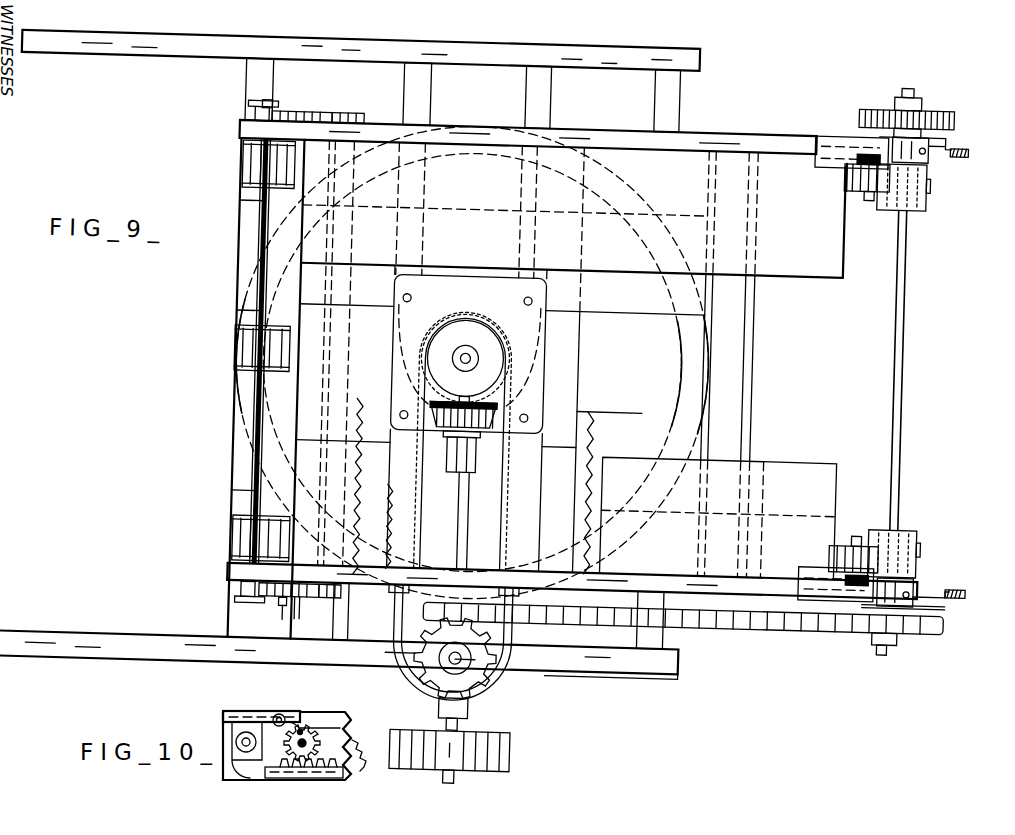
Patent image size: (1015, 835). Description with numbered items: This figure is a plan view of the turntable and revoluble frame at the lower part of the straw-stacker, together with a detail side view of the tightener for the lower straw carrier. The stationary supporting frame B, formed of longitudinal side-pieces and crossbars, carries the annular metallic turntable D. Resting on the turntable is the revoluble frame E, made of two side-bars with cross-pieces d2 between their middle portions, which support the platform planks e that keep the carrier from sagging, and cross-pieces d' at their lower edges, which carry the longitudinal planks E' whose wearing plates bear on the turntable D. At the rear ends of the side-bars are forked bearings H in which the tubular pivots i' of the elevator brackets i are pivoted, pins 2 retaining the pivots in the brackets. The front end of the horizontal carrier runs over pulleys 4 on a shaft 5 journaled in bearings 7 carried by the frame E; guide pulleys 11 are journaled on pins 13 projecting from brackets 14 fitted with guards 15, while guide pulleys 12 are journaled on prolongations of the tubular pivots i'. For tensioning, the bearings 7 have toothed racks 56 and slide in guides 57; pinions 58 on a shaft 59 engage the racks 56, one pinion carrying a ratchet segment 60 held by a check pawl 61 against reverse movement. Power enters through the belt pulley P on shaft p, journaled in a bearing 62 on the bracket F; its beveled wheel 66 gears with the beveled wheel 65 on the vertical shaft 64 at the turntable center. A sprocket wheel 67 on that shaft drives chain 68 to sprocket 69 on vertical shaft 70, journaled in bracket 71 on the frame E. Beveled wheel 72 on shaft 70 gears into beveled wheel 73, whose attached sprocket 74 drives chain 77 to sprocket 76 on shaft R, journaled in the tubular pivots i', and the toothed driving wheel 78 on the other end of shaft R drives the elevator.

In FIG. 9, the pin 2 is at (927, 126).
In FIG. 9, the pulley 4 is at (259, 168).
In FIG. 9, the shaft 5 is at (265, 488).
In FIG. 10, the shaft 5 is at (232, 743).
In FIG. 9, the bearing 7 is at (255, 113).
In FIG. 10, the bearing 7 is at (235, 733).
In FIG. 9, the guide pulley 11 is at (859, 168).
In FIG. 9, the guide pulley 12 is at (930, 190).
In FIG. 9, the pin 13 is at (883, 177).
In FIG. 9, the bracket 14 is at (873, 138).
In FIG. 9, the guard 15 is at (820, 154).
In FIG. 9, the toothed rack 56 is at (366, 108).
In FIG. 10, the toothed rack 56 is at (367, 748).
In FIG. 9, the guide 57 is at (262, 118).
In FIG. 10, the guide 57 is at (253, 713).
In FIG. 9, the toothed pinion 58 is at (331, 108).
In FIG. 10, the toothed pinion 58 is at (322, 752).
In FIG. 9, the shaft 59 is at (332, 108).
In FIG. 10, the shaft 59 is at (308, 722).
In FIG. 10, the ratchet toothed segment 60 is at (303, 738).
In FIG. 9, the check pawl 61 is at (298, 604).
In FIG. 10, the check pawl 61 is at (282, 714).
In FIG. 9, the bearing 62 is at (473, 465).
In FIG. 9, the vertical shaft 64 is at (476, 346).
In FIG. 9, the beveled toothed wheel 65 is at (471, 312).
In FIG. 9, the beveled toothed wheel 66 is at (438, 396).
In FIG. 9, the sprocket wheel 67 is at (499, 349).
In FIG. 9, the drive-chain 68 is at (515, 479).
In FIG. 9, the sprocket-wheel 69 is at (503, 668).
In FIG. 9, the vertical shaft 70 is at (575, 641).
In FIG. 9, the bracket 71 is at (417, 615).
In FIG. 9, the beveled toothed wheel 72 is at (463, 671).
In FIG. 9, the beveled toothed wheel 73 is at (520, 619).
In FIG. 9, the sprocket-wheel 74 is at (592, 557).
In FIG. 9, the sprocket-wheel 76 is at (932, 616).
In FIG. 9, the drive-chain 77 is at (707, 607).
In FIG. 9, the toothed driving wheel 78 is at (931, 94).
In FIG. 9, the stationary supporting frame B is at (148, 646).
In FIG. 9, the annular metallic turntable D is at (257, 440).
In FIG. 9, the revoluble frame E is at (570, 637).
In FIG. 10, the revoluble frame E is at (335, 705).
In FIG. 9, the longitudinal plank E' is at (472, 362).
In FIG. 9, the bracket F is at (568, 383).
In FIG. 9, the forked bearing H is at (919, 141).
In FIG. 9, the belt pulley P is at (530, 742).
In FIG. 9, the shaft R is at (914, 346).
In FIG. 9, the cross-piece d' is at (775, 365).
In FIG. 9, the cross-piece d2 is at (733, 329).
In FIG. 9, the platform plank e is at (809, 254).
In FIG. 9, the bracket i is at (960, 374).
In FIG. 9, the tubular pivot i' is at (937, 368).
In FIG. 9, the shaft p is at (480, 535).